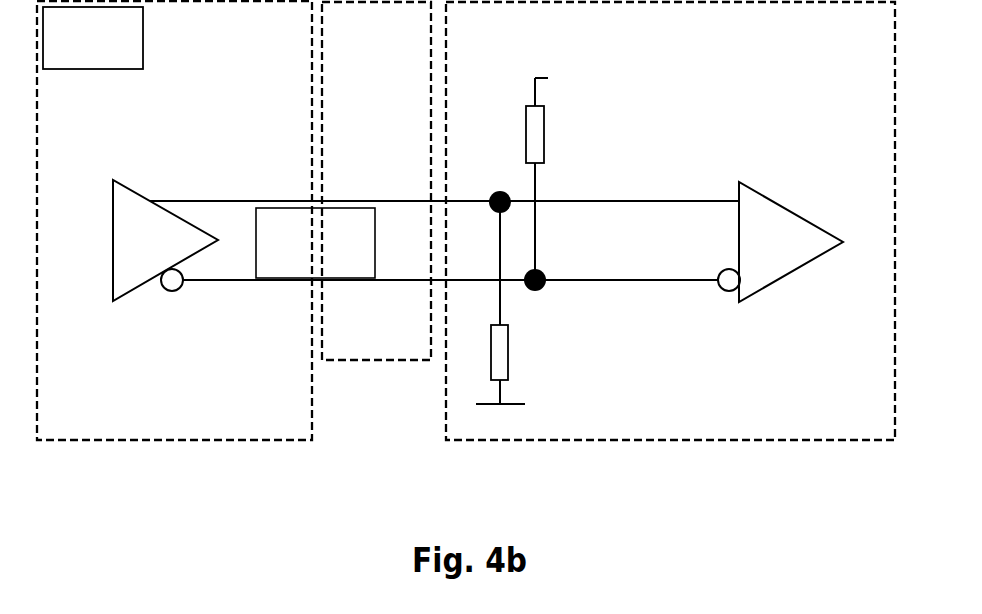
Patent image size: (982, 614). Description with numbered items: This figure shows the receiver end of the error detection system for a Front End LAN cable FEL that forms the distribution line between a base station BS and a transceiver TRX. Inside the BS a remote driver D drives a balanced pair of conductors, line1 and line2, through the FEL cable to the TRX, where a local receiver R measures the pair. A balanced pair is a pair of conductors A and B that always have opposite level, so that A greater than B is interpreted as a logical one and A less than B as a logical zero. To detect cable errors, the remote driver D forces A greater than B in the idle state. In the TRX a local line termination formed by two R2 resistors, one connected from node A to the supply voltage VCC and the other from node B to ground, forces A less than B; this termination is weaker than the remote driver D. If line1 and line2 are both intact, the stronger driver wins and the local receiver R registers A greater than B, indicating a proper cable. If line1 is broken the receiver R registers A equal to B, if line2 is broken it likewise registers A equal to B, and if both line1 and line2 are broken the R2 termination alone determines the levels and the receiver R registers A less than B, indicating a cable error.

The base station BS is at (174, 220).
The Front End LAN cable FEL is at (343, 181).
The transceiver TRX is at (670, 221).
The remote driver D is at (165, 240).
The local receiver R is at (780, 242).
The line 1 line1 is at (343, 178).
The line 2 line2 is at (345, 300).
The conductor A is at (486, 191).
The conductor B is at (504, 291).
The R2 resistors R2 is at (529, 241).
The supply voltage VCC is at (577, 81).